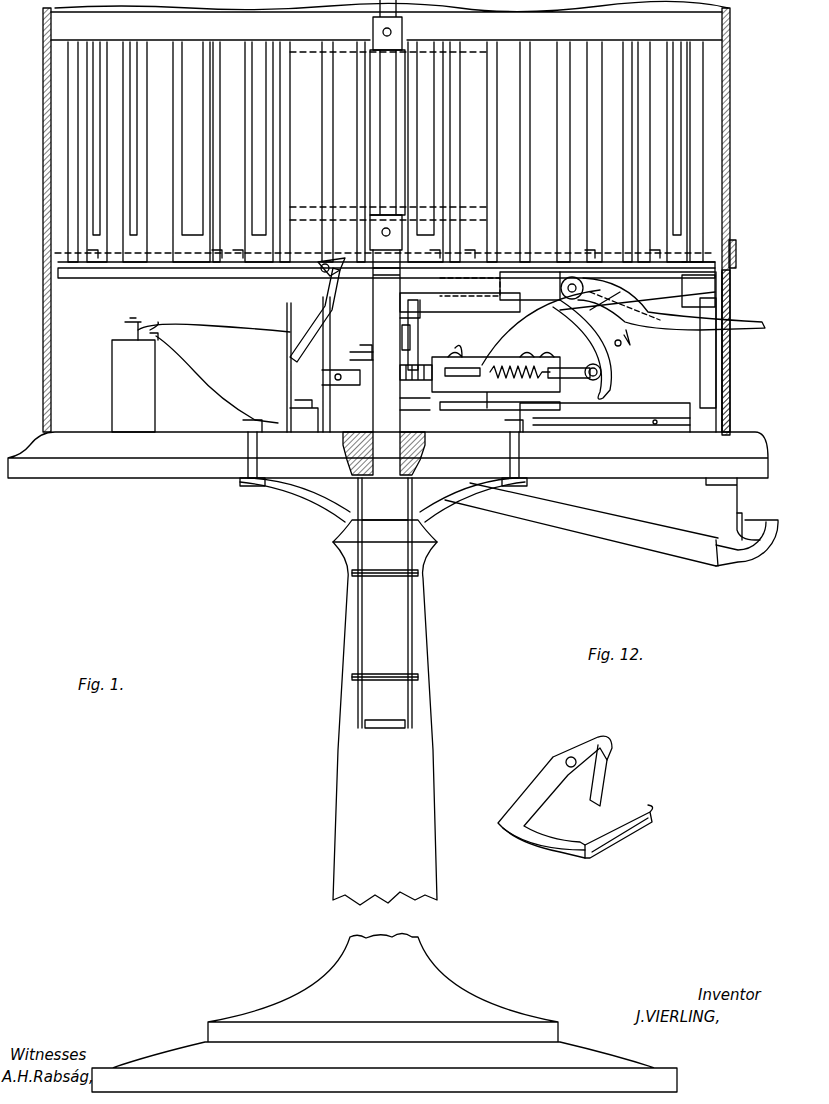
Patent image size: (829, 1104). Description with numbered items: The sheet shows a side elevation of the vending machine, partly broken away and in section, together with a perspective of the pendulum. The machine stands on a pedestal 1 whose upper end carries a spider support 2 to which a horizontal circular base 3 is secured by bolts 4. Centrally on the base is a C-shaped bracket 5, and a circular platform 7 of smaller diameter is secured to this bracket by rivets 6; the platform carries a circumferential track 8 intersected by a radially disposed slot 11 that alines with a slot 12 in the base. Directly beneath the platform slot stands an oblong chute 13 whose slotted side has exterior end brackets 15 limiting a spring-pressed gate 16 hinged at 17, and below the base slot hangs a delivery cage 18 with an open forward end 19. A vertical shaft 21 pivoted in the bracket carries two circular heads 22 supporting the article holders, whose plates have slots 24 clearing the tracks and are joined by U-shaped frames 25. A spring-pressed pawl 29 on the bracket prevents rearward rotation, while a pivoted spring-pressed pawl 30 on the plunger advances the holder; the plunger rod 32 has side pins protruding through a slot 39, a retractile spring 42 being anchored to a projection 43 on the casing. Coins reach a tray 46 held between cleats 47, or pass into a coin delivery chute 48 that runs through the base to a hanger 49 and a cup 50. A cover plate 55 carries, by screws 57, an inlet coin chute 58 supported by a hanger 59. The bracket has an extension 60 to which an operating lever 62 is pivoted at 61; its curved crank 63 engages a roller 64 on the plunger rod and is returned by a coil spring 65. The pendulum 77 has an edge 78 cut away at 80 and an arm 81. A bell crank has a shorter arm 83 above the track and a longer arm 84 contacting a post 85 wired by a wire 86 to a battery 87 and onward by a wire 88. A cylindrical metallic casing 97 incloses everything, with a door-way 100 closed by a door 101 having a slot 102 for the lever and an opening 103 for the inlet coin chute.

In FIG. 1, the pedestal 1 is at (418, 712).
In FIG. 1, the spider support 2 is at (305, 497).
In FIG. 1, the circular base 3 is at (165, 452).
In FIG. 1, the bolts 4 is at (525, 420).
In FIG. 1, the C-shaped bracket 5 is at (460, 302).
In FIG. 1, the rivets 6 is at (490, 285).
In FIG. 1, the circular platform 7 is at (182, 278).
In FIG. 1, the track 8 is at (255, 268).
In FIG. 1, the radially disposed slot 11 is at (400, 265).
In FIG. 1, the slot 12 is at (384, 453).
In FIG. 1, the oblong chute 13 is at (378, 400).
In FIG. 1, the exterior end brackets 15 is at (420, 350).
In FIG. 1, the spring-pressed gate 16 is at (373, 351).
In FIG. 1, the hinge 17 is at (408, 325).
In FIG. 1, the delivery cage 18 is at (415, 648).
In FIG. 1, the open forward end 19 is at (383, 672).
In FIG. 1, the vertical shaft 21 is at (398, 133).
In FIG. 1, the circular heads 22 is at (412, 180).
In FIG. 1, the slots 24 is at (468, 255).
In FIG. 1, the U-shaped frames 25 is at (131, 55).
In FIG. 1, the spring-pressed pawl 29 is at (352, 388).
In FIG. 1, the pivoted spring-pressed pawl 30 is at (418, 385).
In FIG. 1, the plunger rod 32 is at (556, 372).
In FIG. 1, the slot 39 is at (460, 367).
In FIG. 1, the retractile spring 42 is at (500, 395).
In FIG. 1, the projection 43 is at (562, 378).
In FIG. 1, the tray 46 is at (648, 395).
In FIG. 1, the cleats 47 is at (598, 422).
In FIG. 1, the coin delivery chute 48 is at (581, 524).
In FIG. 1, the hanger 49 is at (735, 493).
In FIG. 1, the cup 50 is at (760, 552).
In FIG. 1, the cover plate 55 is at (538, 355).
In FIG. 1, the screws 57 is at (495, 350).
In FIG. 1, the inlet coin chute 58 is at (637, 296).
In FIG. 1, the hanger 59 is at (698, 291).
In FIG. 1, the extension 60 is at (530, 286).
In FIG. 1, the pivot 61 is at (585, 283).
In FIG. 1, the operating lever 62 is at (671, 306).
In FIG. 1, the curved crank 63 is at (618, 365).
In FIG. 1, the roller 64 is at (592, 360).
In FIG. 1, the coil spring 65 is at (632, 340).
In FIG. 12, the pendulum 77 is at (540, 768).
In FIG. 12, the edge 78 is at (628, 850).
In FIG. 12, the cut-away 80 is at (540, 848).
In FIG. 12, the arm 81 is at (604, 785).
In FIG. 1, the shorter arm 83 is at (338, 255).
In FIG. 1, the longer arm 84 is at (318, 330).
In FIG. 1, the post 85 is at (209, 347).
In FIG. 1, the wire 86 is at (200, 365).
In FIG. 1, the battery 87 is at (133, 375).
In FIG. 1, the wire 88 is at (198, 322).
In FIG. 1, the cylindrical metallic casing 97 is at (722, 160).
In FIG. 1, the door-way 100 is at (716, 355).
In FIG. 1, the door 101 is at (738, 246).
In FIG. 1, the slot 102 is at (724, 355).
In FIG. 1, the opening 103 is at (730, 300).